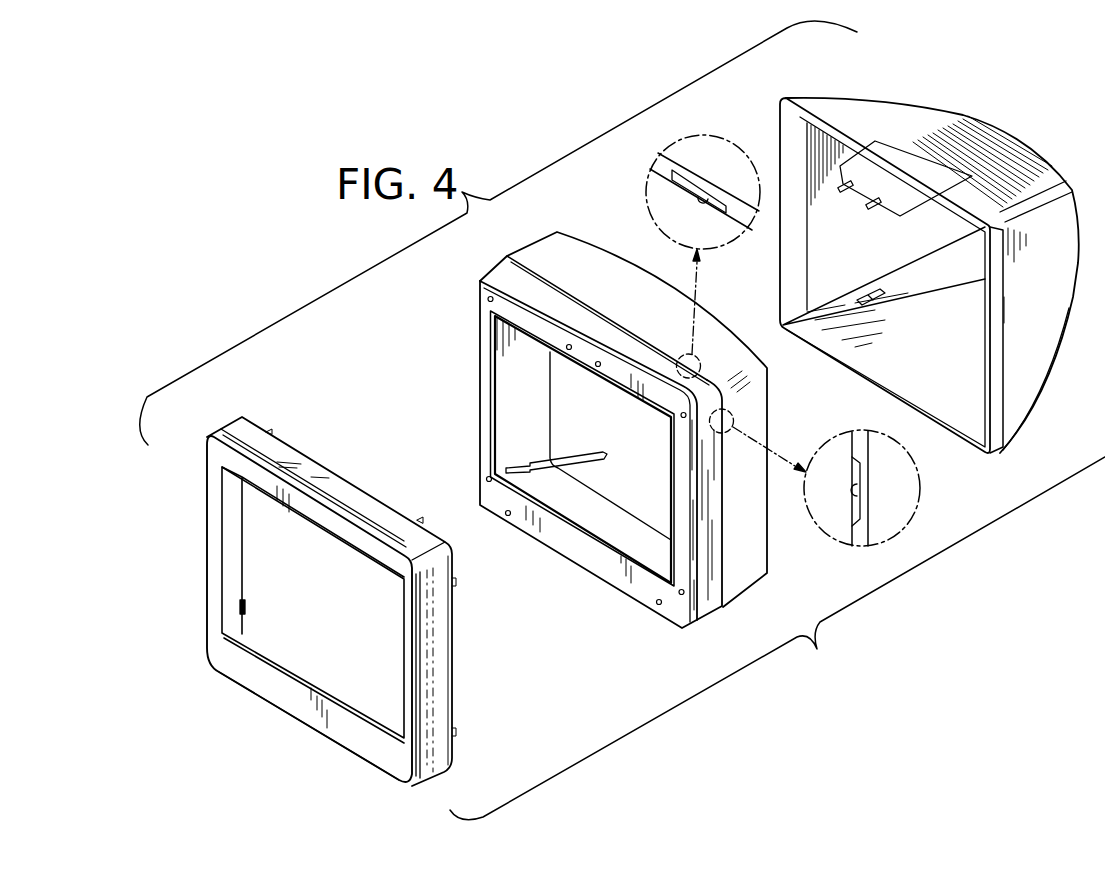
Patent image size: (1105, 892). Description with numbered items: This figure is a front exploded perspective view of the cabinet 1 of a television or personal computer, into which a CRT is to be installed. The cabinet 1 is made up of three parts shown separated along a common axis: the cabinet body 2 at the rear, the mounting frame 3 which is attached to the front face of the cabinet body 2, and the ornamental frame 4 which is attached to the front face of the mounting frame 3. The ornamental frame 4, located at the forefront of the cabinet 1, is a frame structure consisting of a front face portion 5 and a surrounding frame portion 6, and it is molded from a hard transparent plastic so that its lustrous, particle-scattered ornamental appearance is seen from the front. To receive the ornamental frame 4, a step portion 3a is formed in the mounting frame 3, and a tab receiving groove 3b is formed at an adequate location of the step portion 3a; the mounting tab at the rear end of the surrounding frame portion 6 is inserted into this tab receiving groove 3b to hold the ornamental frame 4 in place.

The cabinet 1 is at (622, 420).
The cabinet body 2 is at (1017, 403).
The mounting frame 3 is at (700, 388).
The step portion 3a is at (590, 320).
The tab receiving groove 3b is at (707, 197).
The ornamental frame 4 is at (349, 609).
The front face portion 5 is at (323, 517).
The surrounding frame portion 6 is at (346, 496).